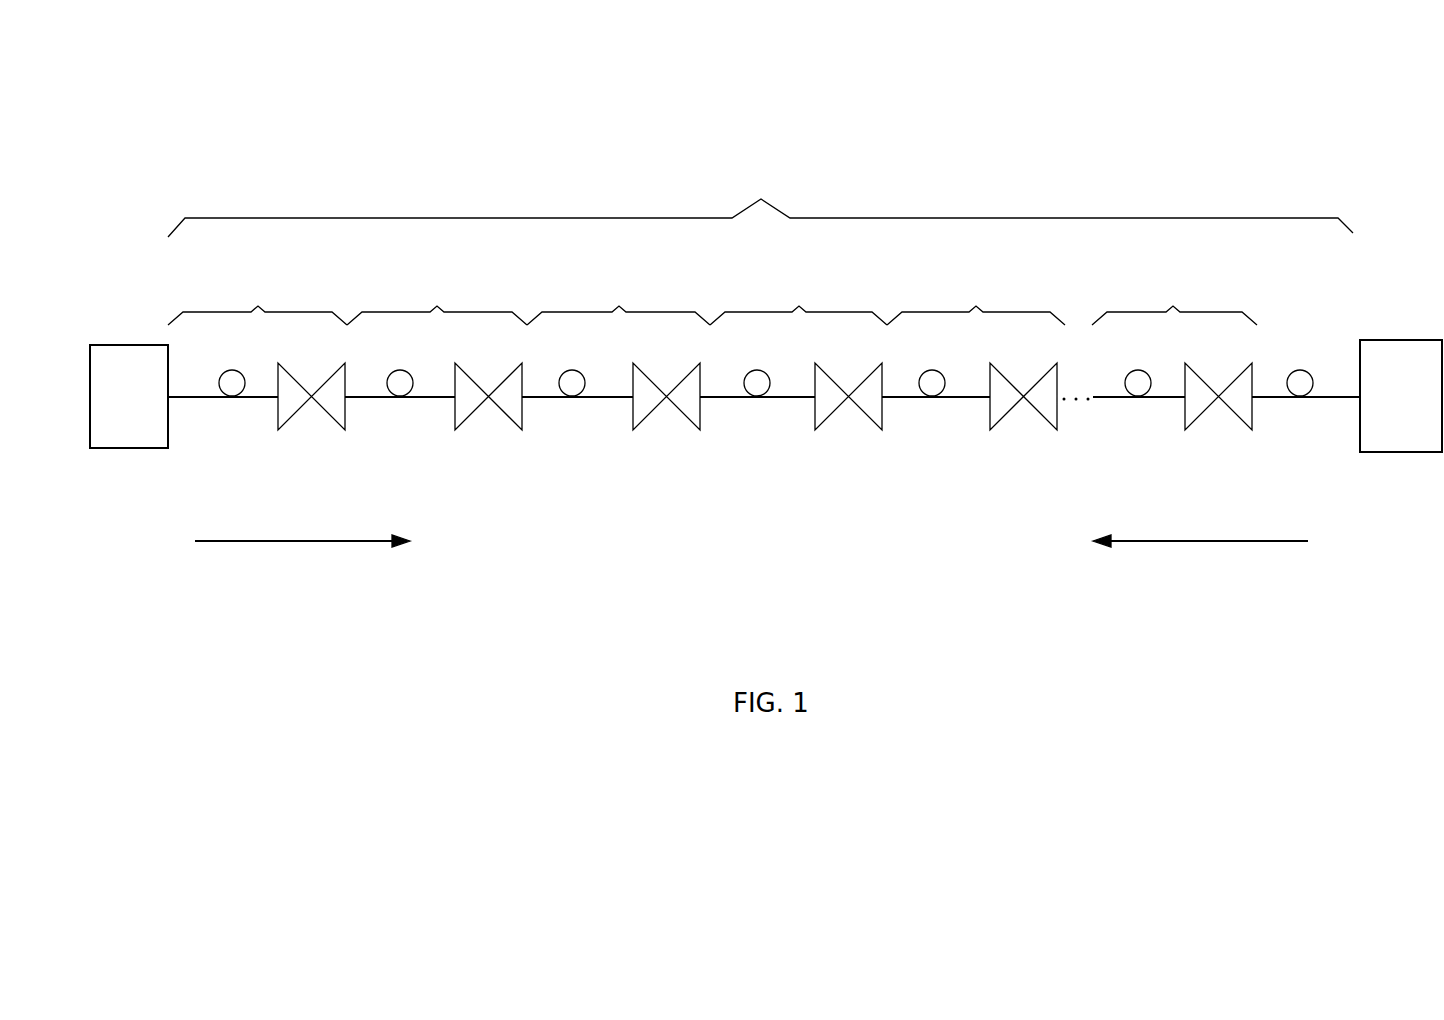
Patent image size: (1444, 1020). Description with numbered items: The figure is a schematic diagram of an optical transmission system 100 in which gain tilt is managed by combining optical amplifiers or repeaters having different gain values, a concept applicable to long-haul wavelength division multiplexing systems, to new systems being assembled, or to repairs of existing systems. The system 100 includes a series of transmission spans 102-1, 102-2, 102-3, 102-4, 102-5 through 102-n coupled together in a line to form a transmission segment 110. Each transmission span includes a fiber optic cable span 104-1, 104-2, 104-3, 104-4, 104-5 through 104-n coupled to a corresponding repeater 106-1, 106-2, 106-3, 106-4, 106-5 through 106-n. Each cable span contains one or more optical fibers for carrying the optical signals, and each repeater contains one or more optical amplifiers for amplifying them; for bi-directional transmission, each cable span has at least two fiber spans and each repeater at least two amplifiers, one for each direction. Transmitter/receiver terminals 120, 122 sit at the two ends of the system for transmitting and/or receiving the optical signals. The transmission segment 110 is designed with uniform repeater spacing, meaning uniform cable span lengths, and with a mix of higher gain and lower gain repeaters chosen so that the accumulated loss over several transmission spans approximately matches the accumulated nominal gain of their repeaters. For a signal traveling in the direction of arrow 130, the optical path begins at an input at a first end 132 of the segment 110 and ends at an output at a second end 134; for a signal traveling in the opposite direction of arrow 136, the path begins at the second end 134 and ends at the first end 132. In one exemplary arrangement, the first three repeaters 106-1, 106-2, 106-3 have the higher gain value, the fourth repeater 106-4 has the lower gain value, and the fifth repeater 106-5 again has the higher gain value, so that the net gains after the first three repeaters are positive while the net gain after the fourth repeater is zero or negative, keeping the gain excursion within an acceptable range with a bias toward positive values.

The optical transmission system 100 is at (935, 106).
The transmission segment 110 is at (760, 203).
The transmission span 102-1 is at (257, 301).
The transmission span 102-2 is at (437, 301).
The transmission span 102-3 is at (618, 301).
The transmission span 102-4 is at (798, 301).
The transmission span 102-5 is at (976, 301).
The transmission span 102-n is at (1174, 301).
The fiber optic cable span 104-1 is at (267, 395).
The fiber optic cable span 104-2 is at (444, 395).
The fiber optic cable span 104-3 is at (622, 395).
The fiber optic cable span 104-4 is at (804, 395).
The fiber optic cable span 104-5 is at (979, 395).
The fiber optic cable span 104-n is at (1174, 395).
The repeater 106-1 is at (331, 415).
The repeater 106-2 is at (508, 415).
The repeater 106-3 is at (686, 415).
The repeater 106-4 is at (868, 415).
The repeater 106-5 is at (1043, 415).
The repeater 106-n is at (1238, 415).
The transmitter/receiver terminal 120 is at (151, 408).
The transmitter/receiver terminal 122 is at (1422, 408).
The arrow 130 is at (298, 542).
The first end 132 is at (170, 400).
The second end 134 is at (1358, 398).
The arrow 136 is at (1183, 541).